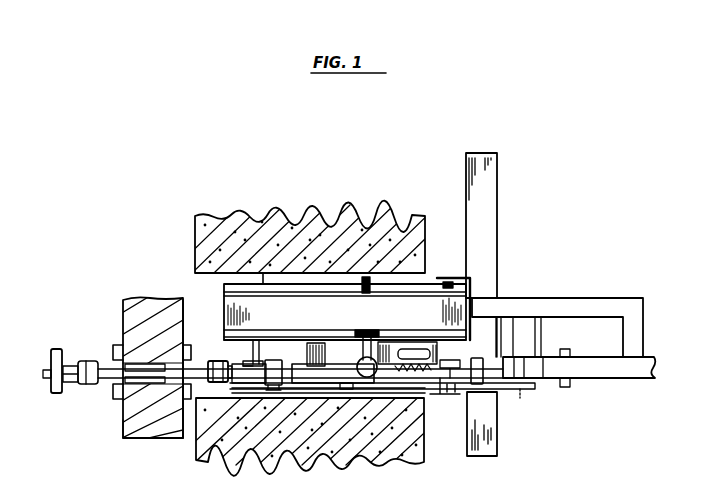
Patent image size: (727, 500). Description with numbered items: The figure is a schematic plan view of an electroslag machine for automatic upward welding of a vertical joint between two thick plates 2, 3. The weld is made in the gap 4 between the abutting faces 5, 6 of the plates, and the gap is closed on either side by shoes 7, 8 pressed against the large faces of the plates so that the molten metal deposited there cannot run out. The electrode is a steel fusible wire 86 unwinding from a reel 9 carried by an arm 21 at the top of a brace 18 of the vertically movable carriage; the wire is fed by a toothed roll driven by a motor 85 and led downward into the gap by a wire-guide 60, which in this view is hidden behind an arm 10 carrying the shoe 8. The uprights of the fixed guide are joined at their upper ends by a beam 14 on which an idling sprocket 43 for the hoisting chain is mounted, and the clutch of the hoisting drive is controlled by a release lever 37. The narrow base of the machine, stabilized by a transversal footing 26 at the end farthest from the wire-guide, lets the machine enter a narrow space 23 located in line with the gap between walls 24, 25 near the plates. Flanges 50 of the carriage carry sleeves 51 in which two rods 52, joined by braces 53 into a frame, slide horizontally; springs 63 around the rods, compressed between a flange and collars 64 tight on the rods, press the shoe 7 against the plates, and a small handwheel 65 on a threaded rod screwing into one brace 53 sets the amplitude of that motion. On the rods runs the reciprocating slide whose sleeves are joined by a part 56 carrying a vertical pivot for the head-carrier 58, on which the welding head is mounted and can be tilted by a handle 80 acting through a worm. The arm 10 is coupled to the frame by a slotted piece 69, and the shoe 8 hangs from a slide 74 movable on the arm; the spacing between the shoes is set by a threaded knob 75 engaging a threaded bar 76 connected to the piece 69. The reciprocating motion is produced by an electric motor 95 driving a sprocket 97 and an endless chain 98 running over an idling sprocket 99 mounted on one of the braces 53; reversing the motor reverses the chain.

The thick plate 2 is at (123, 316).
The thick plate 3 is at (123, 436).
The gap 4 is at (127, 365).
The abutting face 5 is at (140, 362).
The abutting face 6 is at (136, 383).
The shoe 7 is at (188, 354).
The shoe 8 is at (118, 399).
The reel 9 is at (618, 372).
The arm 10 is at (102, 380).
The beam 14 is at (233, 318).
The brace 18 is at (283, 271).
The arm 21 is at (524, 308).
The narrow space 23 is at (215, 325).
The wall 24 is at (196, 222).
The wall 25 is at (196, 460).
The transversal footing 26 is at (490, 215).
The release lever 37 is at (376, 292).
The idling sprocket 43 is at (358, 330).
The flange 50 is at (262, 360).
The sleeve 51 is at (252, 362).
The rod 52 is at (452, 393).
The brace 53 is at (268, 360).
The part 56 is at (346, 390).
The head-carrier 58 is at (318, 355).
The wire-guide 60 is at (183, 322).
The spring 63 is at (418, 385).
The collar 64 is at (375, 378).
The small handwheel 65 is at (567, 386).
The piece 69 is at (211, 362).
The slide 74 is at (88, 361).
The threaded knob 75 is at (70, 366).
The threaded bar 76 is at (52, 352).
The handle 80 is at (406, 352).
The motor 85 is at (448, 288).
The fusible wire 86 is at (496, 390).
The electric motor 95 is at (540, 336).
The sprocket 97 is at (522, 390).
The endless chain 98 is at (482, 424).
The idling sprocket 99 is at (250, 393).